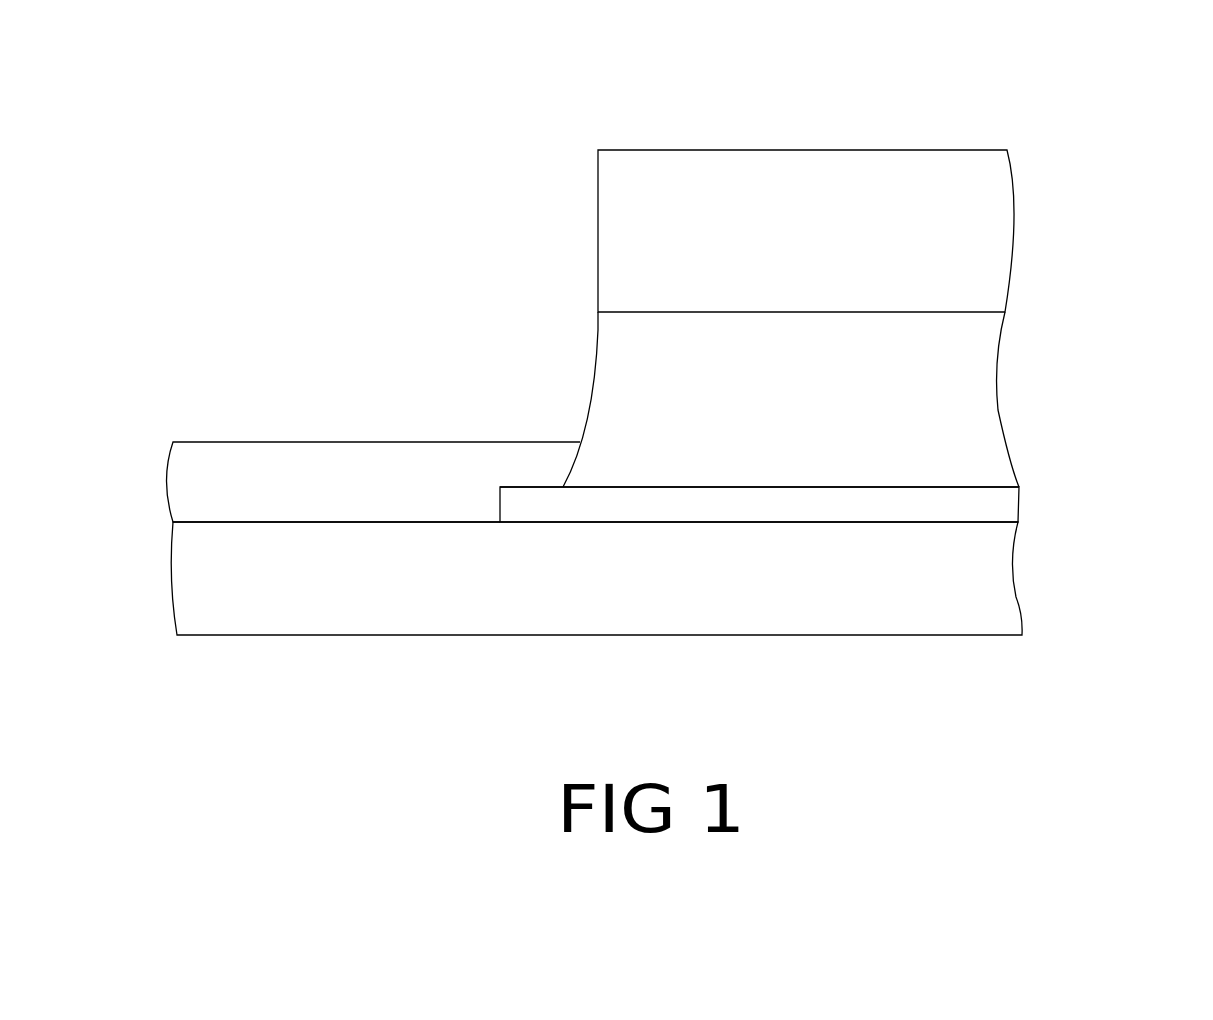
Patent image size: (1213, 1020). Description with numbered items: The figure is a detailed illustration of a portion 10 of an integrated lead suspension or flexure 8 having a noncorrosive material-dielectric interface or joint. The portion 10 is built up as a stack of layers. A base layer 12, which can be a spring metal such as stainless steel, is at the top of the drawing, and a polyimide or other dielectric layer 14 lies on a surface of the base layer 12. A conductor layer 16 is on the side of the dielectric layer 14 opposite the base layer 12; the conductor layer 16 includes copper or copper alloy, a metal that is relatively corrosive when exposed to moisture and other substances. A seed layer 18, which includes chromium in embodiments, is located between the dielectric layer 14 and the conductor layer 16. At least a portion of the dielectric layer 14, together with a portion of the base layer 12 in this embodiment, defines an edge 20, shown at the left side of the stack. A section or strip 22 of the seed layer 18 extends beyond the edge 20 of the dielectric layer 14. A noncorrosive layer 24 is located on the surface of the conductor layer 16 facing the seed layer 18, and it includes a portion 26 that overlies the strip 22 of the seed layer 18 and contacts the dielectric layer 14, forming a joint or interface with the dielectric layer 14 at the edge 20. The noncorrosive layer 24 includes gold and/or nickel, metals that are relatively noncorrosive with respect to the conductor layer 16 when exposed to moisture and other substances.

The integrated lead suspension or flexure 8 is at (1112, 158).
The portion 10 is at (1028, 145).
The base layer 12 is at (1007, 285).
The dielectric layer 14 is at (1000, 410).
The conductor layer 16 is at (1018, 597).
The seed layer 18 is at (1018, 512).
The edge 20 is at (595, 300).
The section or strip 22 is at (530, 487).
The noncorrosive layer 24 is at (202, 442).
The portion 26 is at (557, 442).